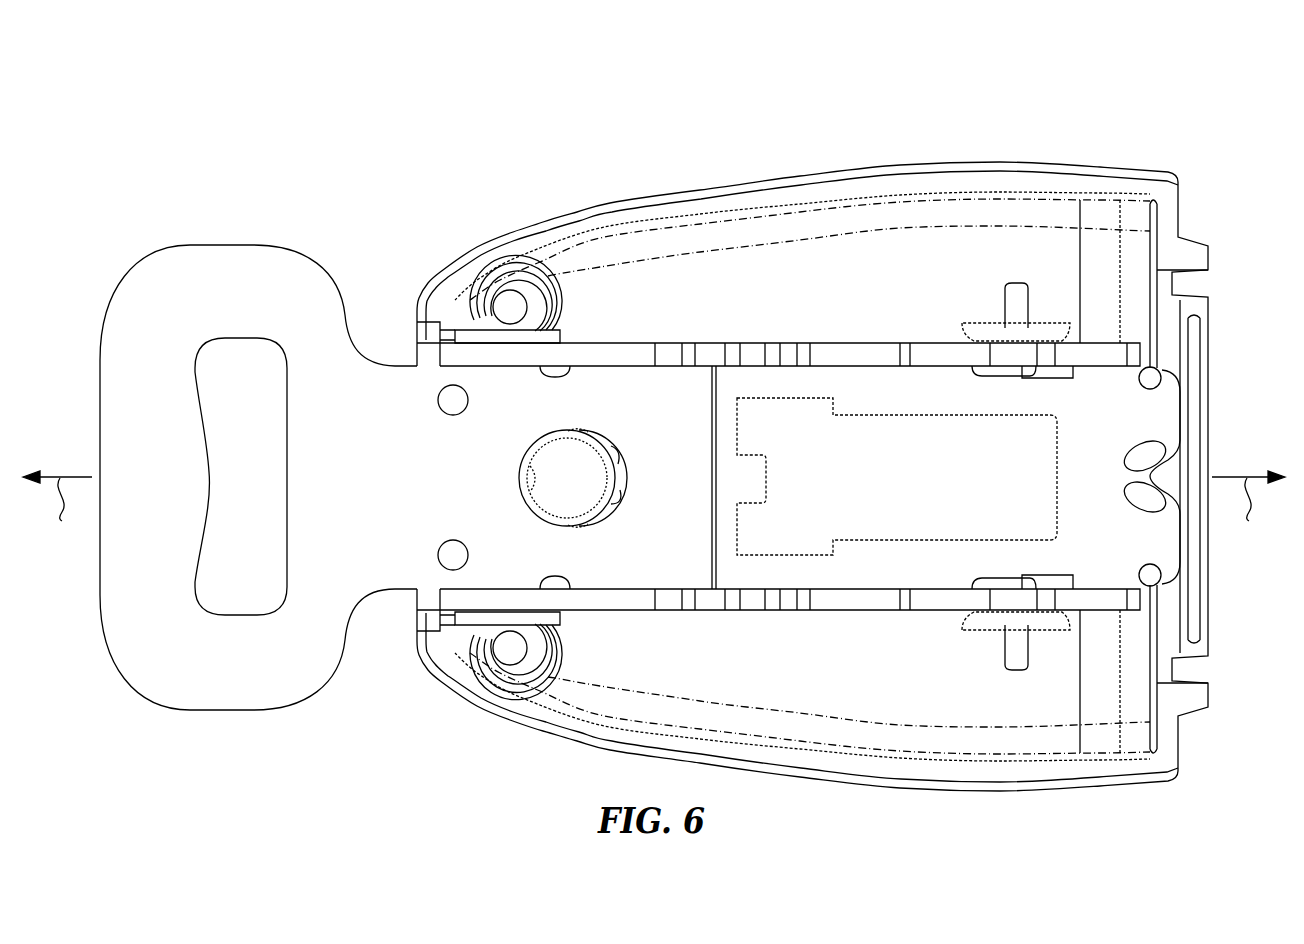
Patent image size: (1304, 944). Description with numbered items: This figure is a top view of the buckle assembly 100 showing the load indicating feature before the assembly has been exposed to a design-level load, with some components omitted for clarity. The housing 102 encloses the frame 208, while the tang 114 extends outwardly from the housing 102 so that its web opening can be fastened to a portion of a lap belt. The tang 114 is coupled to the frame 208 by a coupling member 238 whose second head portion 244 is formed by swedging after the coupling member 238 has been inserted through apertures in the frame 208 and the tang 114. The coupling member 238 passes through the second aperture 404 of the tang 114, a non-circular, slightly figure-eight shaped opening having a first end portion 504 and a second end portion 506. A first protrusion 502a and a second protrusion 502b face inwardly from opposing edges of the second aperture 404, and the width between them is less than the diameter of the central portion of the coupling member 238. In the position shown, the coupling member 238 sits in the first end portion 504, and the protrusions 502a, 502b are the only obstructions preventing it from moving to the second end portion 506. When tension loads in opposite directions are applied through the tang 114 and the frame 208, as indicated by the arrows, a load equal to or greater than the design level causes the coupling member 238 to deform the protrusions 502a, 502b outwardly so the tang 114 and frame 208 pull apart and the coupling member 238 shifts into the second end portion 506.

The buckle assembly 100 is at (126, 127).
The housing 102 is at (622, 204).
The tang 114 is at (187, 257).
The frame 208 is at (848, 352).
The coupling member 238 is at (526, 456).
The second head portion 244 is at (547, 431).
The second aperture 404 is at (622, 456).
The first protrusion 502a is at (579, 434).
The second protrusion 502b is at (578, 524).
The first end portion 504 is at (534, 483).
The second end portion 506 is at (622, 490).